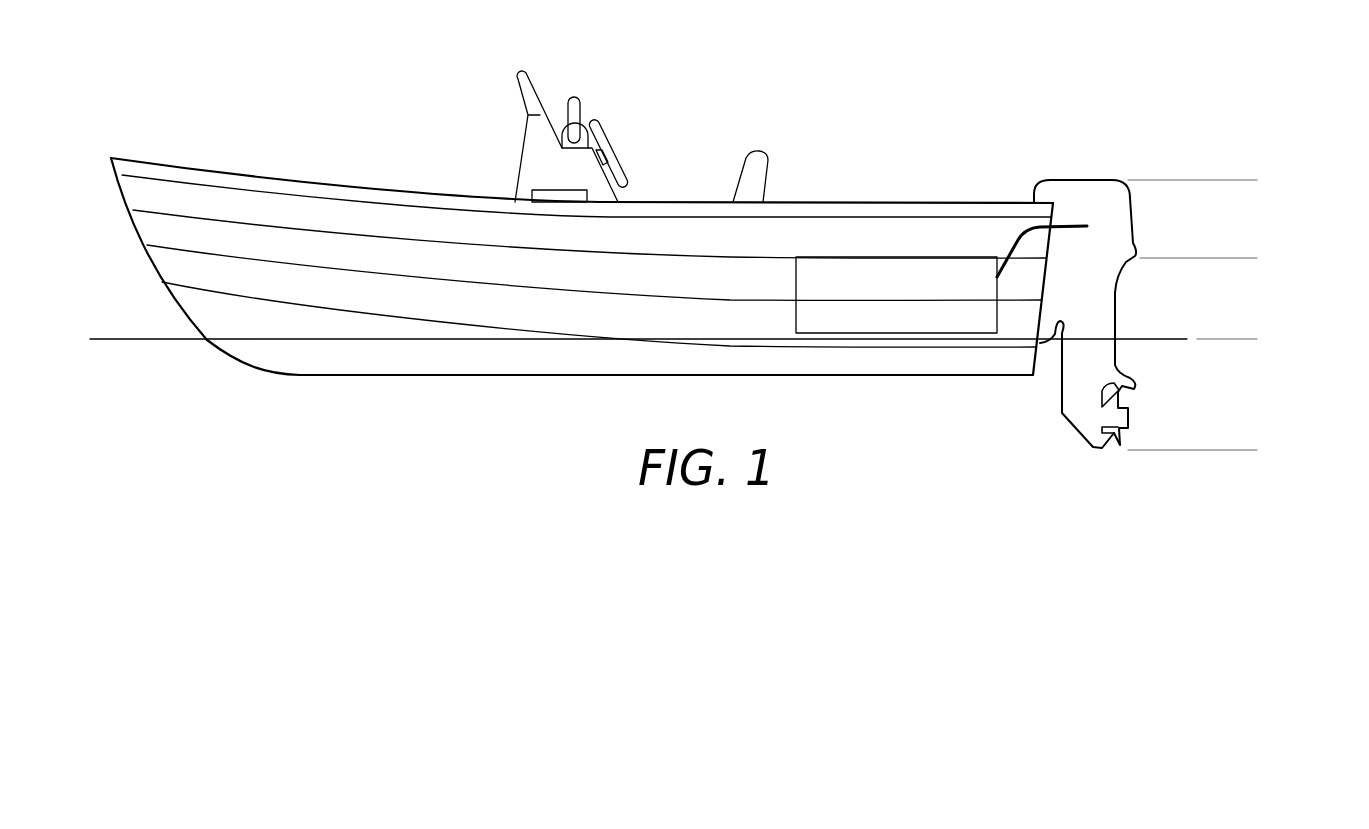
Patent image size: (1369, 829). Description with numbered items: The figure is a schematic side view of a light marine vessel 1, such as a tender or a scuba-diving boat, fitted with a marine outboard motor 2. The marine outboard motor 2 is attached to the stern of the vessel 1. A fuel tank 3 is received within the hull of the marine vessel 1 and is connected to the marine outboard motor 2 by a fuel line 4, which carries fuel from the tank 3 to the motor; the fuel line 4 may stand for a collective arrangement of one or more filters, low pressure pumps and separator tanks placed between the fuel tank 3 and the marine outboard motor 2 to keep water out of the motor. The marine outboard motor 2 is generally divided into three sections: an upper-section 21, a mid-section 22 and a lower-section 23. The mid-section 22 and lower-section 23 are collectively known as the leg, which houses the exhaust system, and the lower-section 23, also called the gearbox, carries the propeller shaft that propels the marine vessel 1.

The marine vessel 1 is at (298, 63).
The marine outboard motor 2 is at (1088, 188).
The fuel tank 3 is at (897, 320).
The fuel line 4 is at (1018, 232).
The upper-section 21 is at (1268, 180).
The mid-section 22 is at (1268, 262).
The lower-section 23 is at (1268, 343).